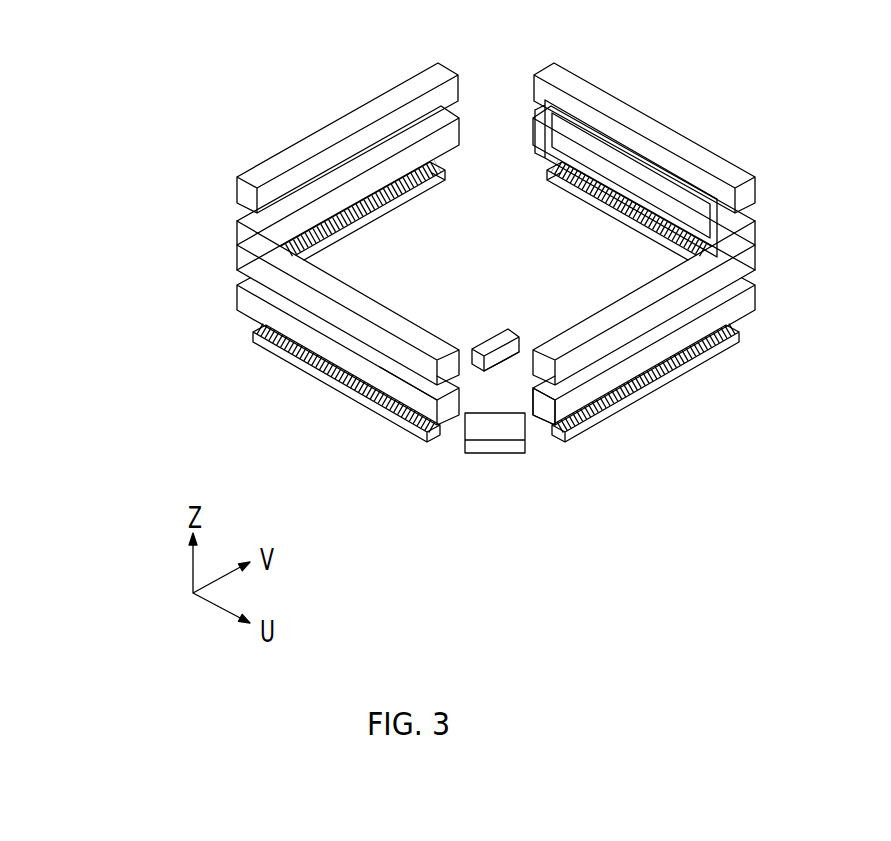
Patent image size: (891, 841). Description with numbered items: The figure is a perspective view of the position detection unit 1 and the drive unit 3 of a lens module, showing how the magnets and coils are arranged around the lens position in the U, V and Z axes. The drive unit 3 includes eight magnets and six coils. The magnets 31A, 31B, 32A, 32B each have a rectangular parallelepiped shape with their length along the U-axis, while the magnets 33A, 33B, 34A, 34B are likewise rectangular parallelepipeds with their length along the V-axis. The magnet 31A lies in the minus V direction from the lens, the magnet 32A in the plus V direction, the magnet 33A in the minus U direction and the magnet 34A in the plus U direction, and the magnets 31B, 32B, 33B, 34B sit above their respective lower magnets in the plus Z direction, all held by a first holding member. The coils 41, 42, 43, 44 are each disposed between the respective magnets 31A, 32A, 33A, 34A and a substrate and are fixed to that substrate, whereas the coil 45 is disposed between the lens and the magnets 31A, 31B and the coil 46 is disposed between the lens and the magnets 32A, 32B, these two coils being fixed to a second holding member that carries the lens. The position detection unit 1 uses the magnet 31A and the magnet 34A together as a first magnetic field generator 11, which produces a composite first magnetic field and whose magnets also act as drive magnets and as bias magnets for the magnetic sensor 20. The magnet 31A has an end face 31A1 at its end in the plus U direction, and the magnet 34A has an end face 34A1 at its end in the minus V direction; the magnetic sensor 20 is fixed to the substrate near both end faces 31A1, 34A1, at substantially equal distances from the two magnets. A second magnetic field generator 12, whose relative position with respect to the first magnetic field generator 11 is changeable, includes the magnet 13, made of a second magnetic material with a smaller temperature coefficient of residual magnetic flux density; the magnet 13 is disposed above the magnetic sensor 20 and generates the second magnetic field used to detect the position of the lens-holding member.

The position detection unit 1 is at (496, 441).
The drive unit 3 is at (503, 224).
The first magnetic field generator 11 is at (496, 415).
The second magnetic field generator 12 is at (523, 458).
The magnet 13 is at (500, 370).
The magnetic sensor 20 is at (497, 455).
The magnet 31A is at (348, 406).
The end face 31A1 is at (397, 388).
The magnet 31B is at (236, 262).
The magnet 32A is at (756, 233).
The magnet 32B is at (757, 193).
The magnet 33A is at (236, 233).
The magnet 33B is at (236, 190).
The magnet 34A is at (627, 401).
The end face 34A1 is at (531, 396).
The magnet 34B is at (695, 303).
The coil 41 is at (322, 380).
The coil 42 is at (647, 228).
The coil 43 is at (345, 228).
The coil 44 is at (640, 405).
The coil 45 is at (474, 350).
The coil 46 is at (640, 150).